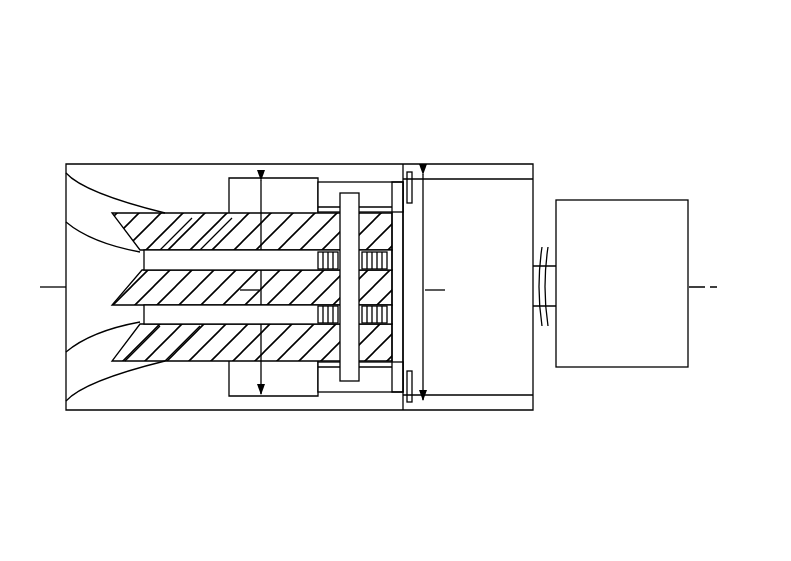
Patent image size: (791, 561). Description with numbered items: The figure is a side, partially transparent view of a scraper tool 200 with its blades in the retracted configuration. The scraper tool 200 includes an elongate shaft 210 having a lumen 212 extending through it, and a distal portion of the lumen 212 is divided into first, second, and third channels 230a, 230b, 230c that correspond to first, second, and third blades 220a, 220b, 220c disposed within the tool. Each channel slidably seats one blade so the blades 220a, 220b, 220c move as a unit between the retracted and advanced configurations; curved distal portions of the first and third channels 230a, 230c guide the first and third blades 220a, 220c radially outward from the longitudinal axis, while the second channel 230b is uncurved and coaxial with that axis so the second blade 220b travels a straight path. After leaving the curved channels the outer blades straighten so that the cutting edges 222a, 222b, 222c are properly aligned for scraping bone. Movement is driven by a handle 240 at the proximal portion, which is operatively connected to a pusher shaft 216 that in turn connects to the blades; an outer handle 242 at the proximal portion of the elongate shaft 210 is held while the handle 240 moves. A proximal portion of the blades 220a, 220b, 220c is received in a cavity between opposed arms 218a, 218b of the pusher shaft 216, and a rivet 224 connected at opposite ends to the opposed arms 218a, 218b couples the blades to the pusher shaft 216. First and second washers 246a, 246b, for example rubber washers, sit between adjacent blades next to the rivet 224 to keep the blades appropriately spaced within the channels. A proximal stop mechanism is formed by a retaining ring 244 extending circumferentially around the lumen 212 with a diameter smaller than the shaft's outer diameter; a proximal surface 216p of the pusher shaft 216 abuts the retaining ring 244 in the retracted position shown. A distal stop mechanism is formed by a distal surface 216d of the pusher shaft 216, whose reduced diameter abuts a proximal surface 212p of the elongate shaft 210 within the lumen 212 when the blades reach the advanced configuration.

The scraper tool 200 is at (82, 68).
The elongate shaft 210 is at (288, 192).
The lumen 212 is at (312, 188).
The proximal surface 212p is at (234, 196).
The pusher shaft 216 is at (533, 340).
The distal surface 216d is at (312, 186).
The proximal surface 216p is at (410, 213).
The opposed arm 218a is at (368, 192).
The opposed arm 218b is at (380, 370).
The first blade 220a is at (174, 230).
The second blade 220b is at (178, 336).
The third blade 220c is at (132, 346).
The cutting edge 222a is at (125, 228).
The cutting edge 222b is at (125, 289).
The cutting edge 222c is at (124, 346).
The rivet 224 is at (350, 381).
The first channel 230a is at (78, 185).
The second channel 230b is at (143, 315).
The third channel 230c is at (78, 389).
The handle 240 is at (636, 358).
The outer handle 242 is at (416, 180).
The retaining ring 244 is at (413, 173).
The first washer 246a is at (384, 250).
The second washer 246b is at (322, 322).